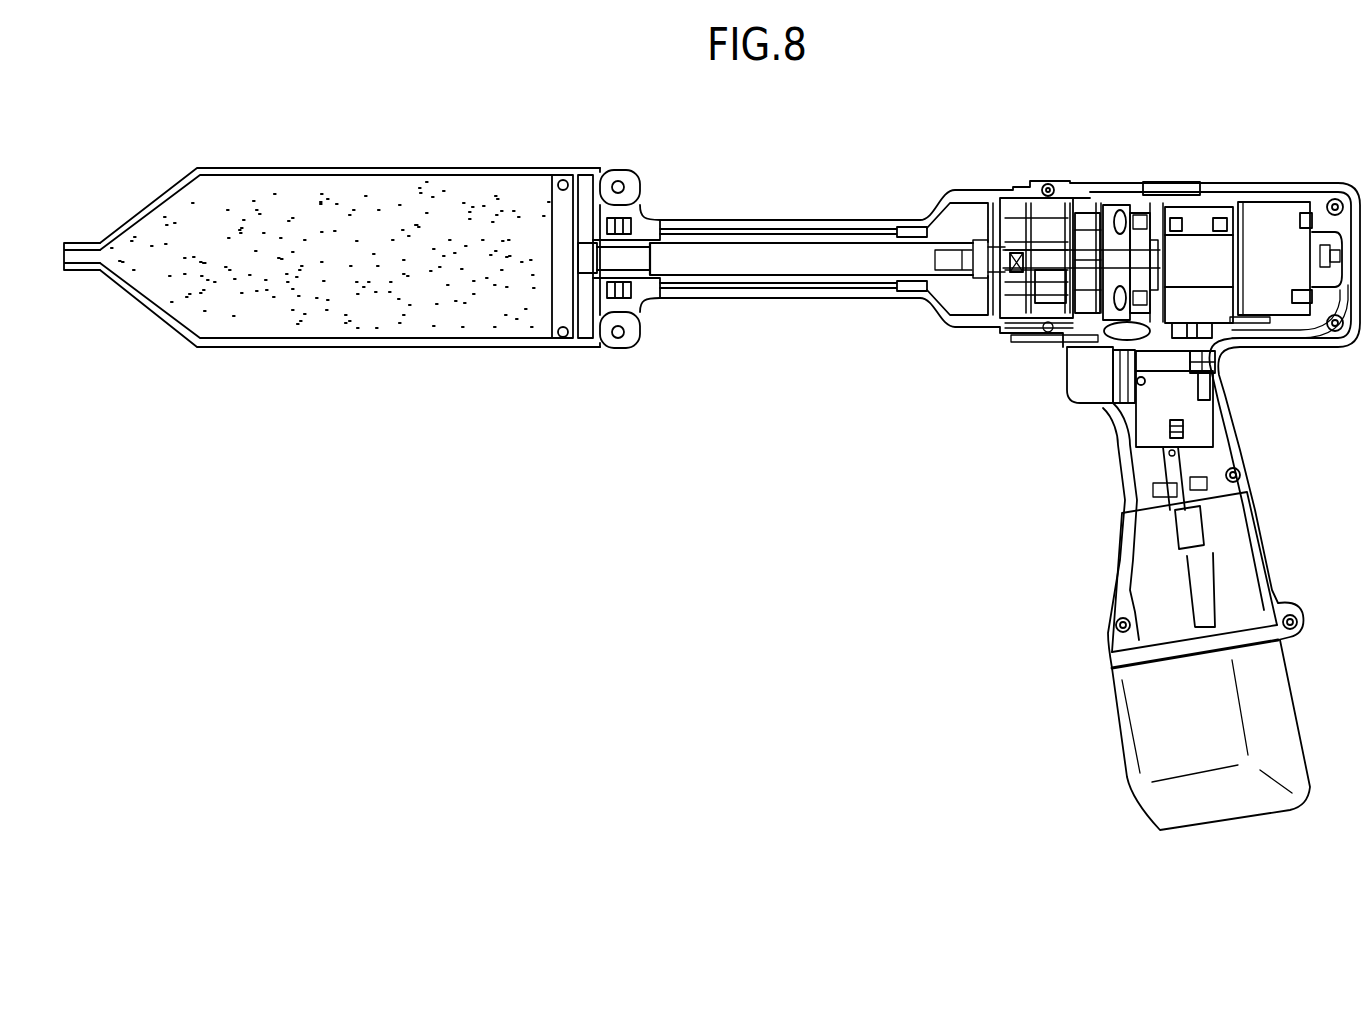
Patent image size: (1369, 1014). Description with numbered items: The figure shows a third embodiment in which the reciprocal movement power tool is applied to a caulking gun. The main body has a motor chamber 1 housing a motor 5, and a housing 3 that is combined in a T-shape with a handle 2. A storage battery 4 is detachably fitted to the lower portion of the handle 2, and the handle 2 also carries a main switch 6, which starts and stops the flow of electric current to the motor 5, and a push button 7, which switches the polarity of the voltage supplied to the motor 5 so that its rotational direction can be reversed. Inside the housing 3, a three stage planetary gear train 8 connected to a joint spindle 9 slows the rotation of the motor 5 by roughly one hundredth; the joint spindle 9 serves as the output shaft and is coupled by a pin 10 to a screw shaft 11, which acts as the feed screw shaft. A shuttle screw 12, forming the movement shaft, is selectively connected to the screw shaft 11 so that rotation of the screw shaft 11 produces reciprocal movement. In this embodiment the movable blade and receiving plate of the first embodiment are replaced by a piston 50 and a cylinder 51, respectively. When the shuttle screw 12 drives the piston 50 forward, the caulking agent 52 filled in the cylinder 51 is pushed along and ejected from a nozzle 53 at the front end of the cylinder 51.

The motor chamber 1 is at (1262, 185).
The handle 2 is at (1253, 456).
The housing 3 is at (1185, 178).
The storage battery 4 is at (1255, 567).
The motor 5 is at (1283, 217).
The main switch 6 is at (1147, 425).
The push button 7 is at (1110, 340).
The three stage planetary gear train 8 is at (1046, 290).
The joint spindle 9 is at (995, 250).
The pin 10 is at (985, 278).
The screw shaft 11 is at (643, 222).
The shuttle screw 12 is at (802, 258).
The piston 50 is at (563, 212).
The cylinder 51 is at (248, 172).
The sealant 52 is at (400, 215).
The nozzle 53 is at (80, 268).